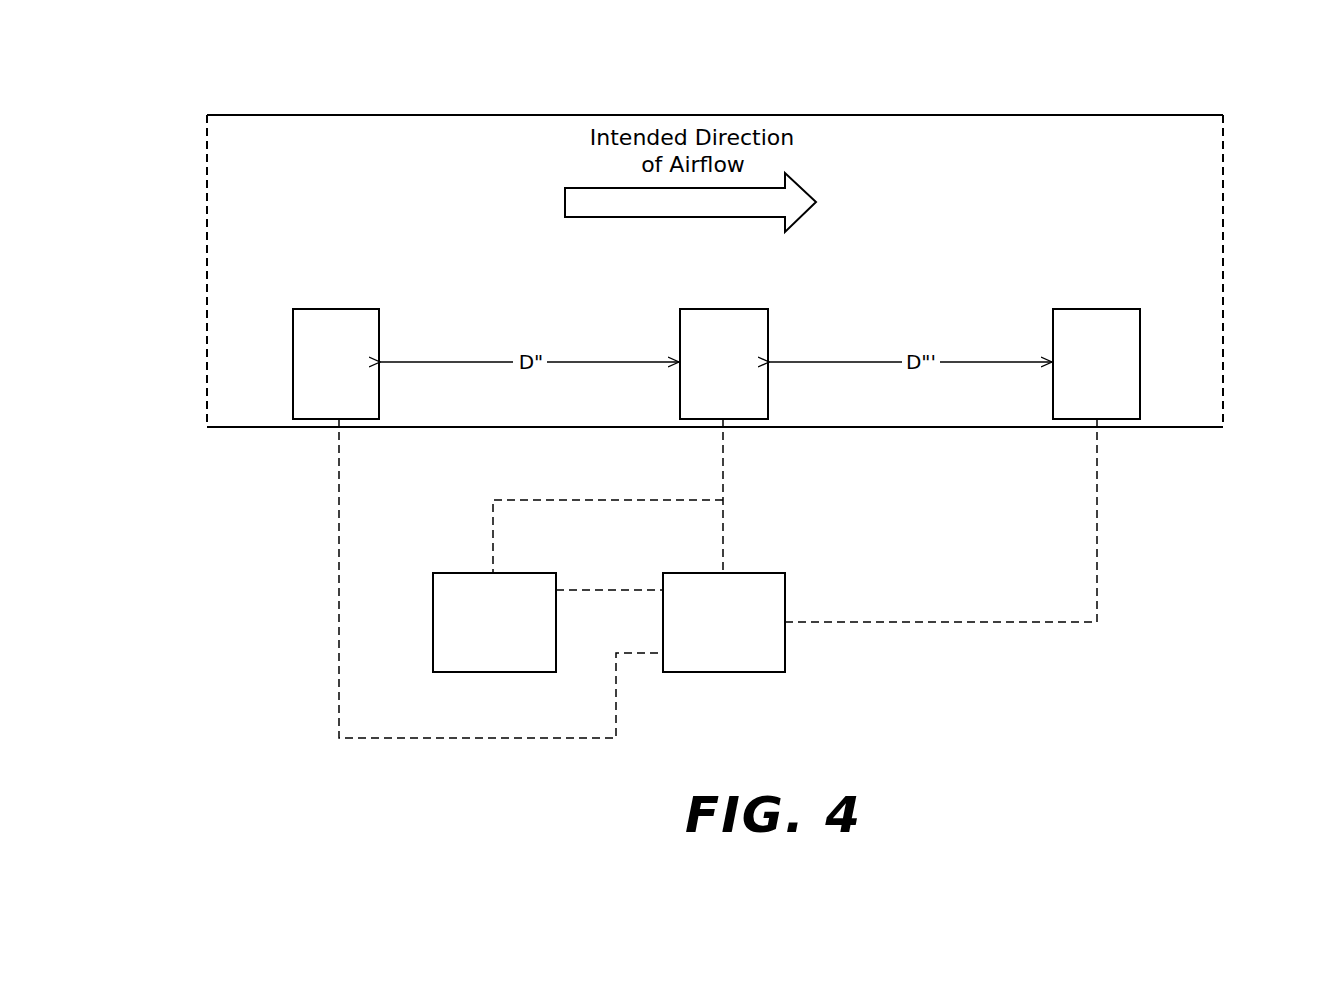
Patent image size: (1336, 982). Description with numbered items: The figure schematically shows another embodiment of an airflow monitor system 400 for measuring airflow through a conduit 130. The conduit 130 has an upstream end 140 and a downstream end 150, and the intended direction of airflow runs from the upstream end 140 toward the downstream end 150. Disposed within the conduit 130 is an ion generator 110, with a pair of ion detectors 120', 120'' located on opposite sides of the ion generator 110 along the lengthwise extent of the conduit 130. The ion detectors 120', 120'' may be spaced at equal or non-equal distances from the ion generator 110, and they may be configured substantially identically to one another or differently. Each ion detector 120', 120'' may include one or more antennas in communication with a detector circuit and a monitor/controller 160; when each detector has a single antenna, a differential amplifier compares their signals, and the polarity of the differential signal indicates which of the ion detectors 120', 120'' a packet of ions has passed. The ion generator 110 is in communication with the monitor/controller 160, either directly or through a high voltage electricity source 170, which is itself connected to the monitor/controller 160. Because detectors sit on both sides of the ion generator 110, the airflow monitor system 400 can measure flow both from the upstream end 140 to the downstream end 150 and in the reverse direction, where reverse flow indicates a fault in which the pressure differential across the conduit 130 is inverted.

The airflow monitor system 400 is at (577, 92).
The conduit 130 is at (900, 112).
The upstream end 140 is at (207, 190).
The downstream end 150 is at (1223, 180).
The ion detector 120' is at (366, 332).
The ion generator 110 is at (718, 309).
The ion detector 120'' is at (1115, 333).
The high voltage electricity source 170 is at (515, 573).
The monitor/controller 160 is at (750, 573).